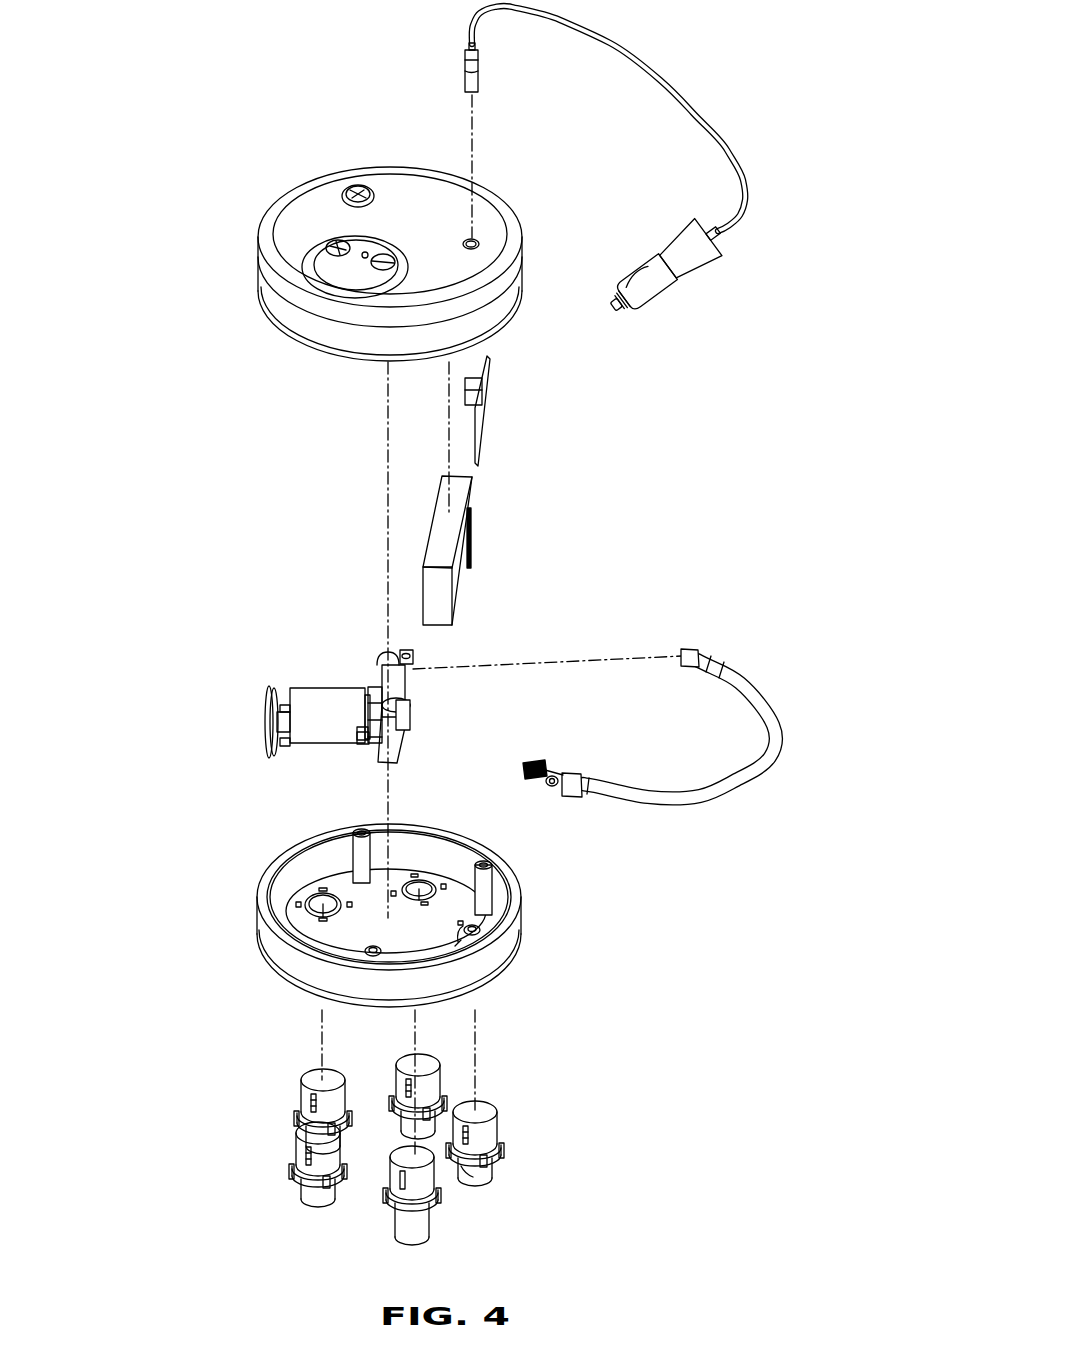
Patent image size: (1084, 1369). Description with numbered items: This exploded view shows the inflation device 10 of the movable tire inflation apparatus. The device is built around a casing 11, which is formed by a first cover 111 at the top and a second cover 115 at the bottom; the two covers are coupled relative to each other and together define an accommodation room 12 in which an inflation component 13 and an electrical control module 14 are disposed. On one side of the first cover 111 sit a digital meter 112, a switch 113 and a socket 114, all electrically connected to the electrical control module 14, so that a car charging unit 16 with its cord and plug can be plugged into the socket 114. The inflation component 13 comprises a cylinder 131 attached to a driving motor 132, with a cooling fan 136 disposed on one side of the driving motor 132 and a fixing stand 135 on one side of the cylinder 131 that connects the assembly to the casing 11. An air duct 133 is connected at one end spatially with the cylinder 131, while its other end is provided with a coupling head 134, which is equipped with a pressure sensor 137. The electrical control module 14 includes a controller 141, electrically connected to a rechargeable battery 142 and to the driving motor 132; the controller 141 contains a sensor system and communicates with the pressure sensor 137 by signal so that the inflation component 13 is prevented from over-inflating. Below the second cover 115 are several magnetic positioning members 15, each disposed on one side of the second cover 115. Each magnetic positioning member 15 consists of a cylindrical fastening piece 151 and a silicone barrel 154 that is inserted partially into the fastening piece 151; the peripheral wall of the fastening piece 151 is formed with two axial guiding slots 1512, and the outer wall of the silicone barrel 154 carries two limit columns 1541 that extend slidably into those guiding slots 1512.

The inflation device 10 is at (402, 170).
The casing 11 is at (302, 186).
The first cover 111 is at (290, 254).
The digital meter 112 is at (322, 248).
The switch 113 is at (346, 190).
The socket 114 is at (487, 244).
The accommodation room 12 is at (312, 863).
The second cover 115 is at (530, 945).
The inflation component 13 is at (378, 673).
The cylinder 131 is at (405, 720).
The driving motor 132 is at (320, 695).
The air duct 133 is at (755, 680).
The coupling head 134 is at (533, 780).
The fixing stand 135 is at (418, 658).
The cooling fan 136 is at (265, 725).
The pressure sensor 137 is at (552, 786).
The electrical control module 14 is at (480, 442).
The controller 141 is at (492, 410).
The rechargeable battery 142 is at (470, 548).
The magnetic positioning member 15 is at (500, 1125).
The fastening piece 151 is at (524, 1144).
The guiding slot 1512 is at (529, 1157).
The silicone barrel 154 is at (514, 1203).
The limit column 1541 is at (471, 1207).
The car charging unit 16 is at (745, 205).